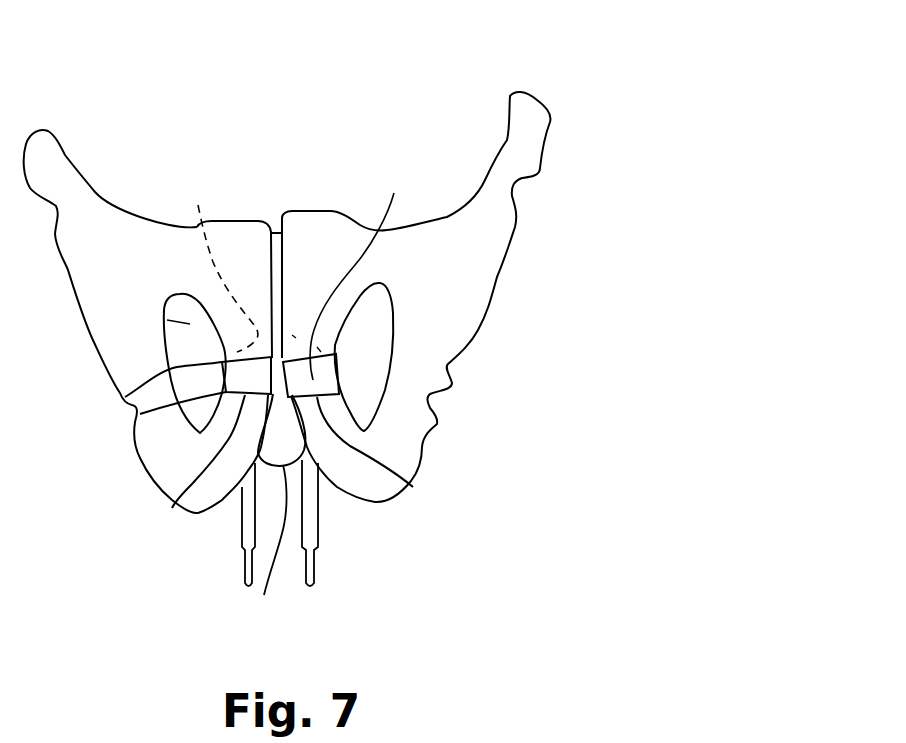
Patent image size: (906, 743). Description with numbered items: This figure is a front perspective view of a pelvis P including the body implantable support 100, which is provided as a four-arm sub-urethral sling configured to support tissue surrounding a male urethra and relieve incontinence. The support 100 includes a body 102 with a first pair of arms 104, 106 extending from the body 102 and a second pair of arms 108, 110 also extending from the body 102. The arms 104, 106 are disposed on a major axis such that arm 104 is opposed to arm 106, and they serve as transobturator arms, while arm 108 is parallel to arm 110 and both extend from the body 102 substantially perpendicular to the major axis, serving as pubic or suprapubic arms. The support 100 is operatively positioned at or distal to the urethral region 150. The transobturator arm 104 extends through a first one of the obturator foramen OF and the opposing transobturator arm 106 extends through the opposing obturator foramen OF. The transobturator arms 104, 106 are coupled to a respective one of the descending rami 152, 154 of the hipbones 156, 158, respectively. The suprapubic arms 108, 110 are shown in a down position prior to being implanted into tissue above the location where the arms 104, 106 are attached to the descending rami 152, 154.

The pelvis P is at (309, 260).
The support 100 is at (297, 305).
The body 102 is at (222, 262).
The arm 104 is at (124, 397).
The arm 106 is at (363, 273).
The arm 108 is at (245, 545).
The arm 110 is at (318, 538).
The urethral region 150 is at (264, 595).
The descending ramus 152 is at (172, 508).
The descending ramus 154 is at (413, 487).
The hipbone 156 is at (68, 174).
The hipbone 158 is at (490, 240).
The obturator foramen OF is at (190, 325).